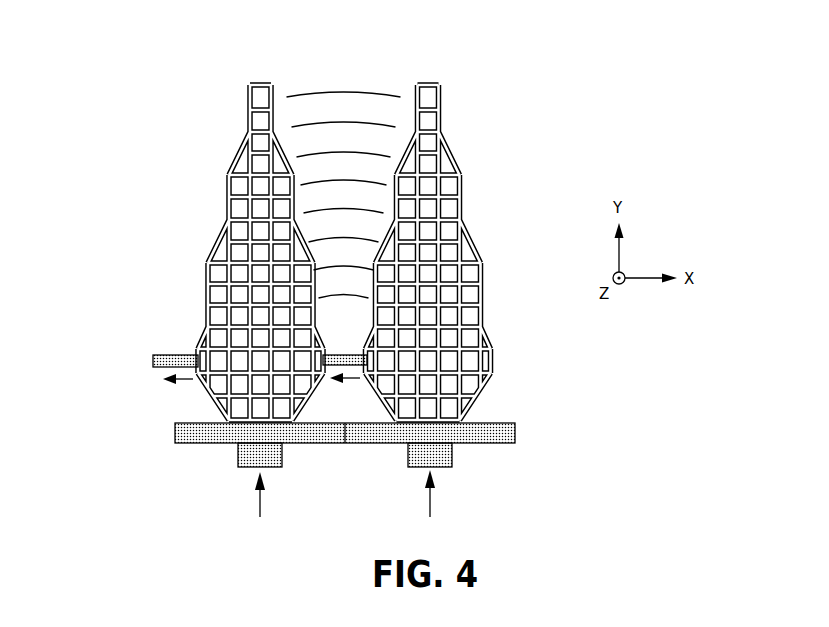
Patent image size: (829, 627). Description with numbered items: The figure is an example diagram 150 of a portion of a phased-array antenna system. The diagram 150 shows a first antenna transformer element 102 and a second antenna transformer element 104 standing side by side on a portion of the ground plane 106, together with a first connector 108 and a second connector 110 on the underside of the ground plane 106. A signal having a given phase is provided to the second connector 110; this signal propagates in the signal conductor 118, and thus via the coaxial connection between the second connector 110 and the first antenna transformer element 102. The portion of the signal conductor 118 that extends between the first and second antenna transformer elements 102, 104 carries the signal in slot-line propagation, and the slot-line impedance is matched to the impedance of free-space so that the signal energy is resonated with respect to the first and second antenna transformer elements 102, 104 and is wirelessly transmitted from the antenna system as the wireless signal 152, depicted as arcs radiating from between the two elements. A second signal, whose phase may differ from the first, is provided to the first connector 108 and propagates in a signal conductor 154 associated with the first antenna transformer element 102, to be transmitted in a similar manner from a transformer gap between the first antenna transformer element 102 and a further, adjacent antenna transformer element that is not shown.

The diagram 150 is at (134, 66).
The first antenna transformer element 102 is at (248, 118).
The second antenna transformer element 104 is at (442, 122).
The ground plane 106 is at (183, 445).
The first connector 108 is at (238, 468).
The second connector 110 is at (410, 468).
The signal conductor 118 is at (367, 350).
The wireless signal 152 is at (343, 68).
The signal conductor 154 is at (183, 354).